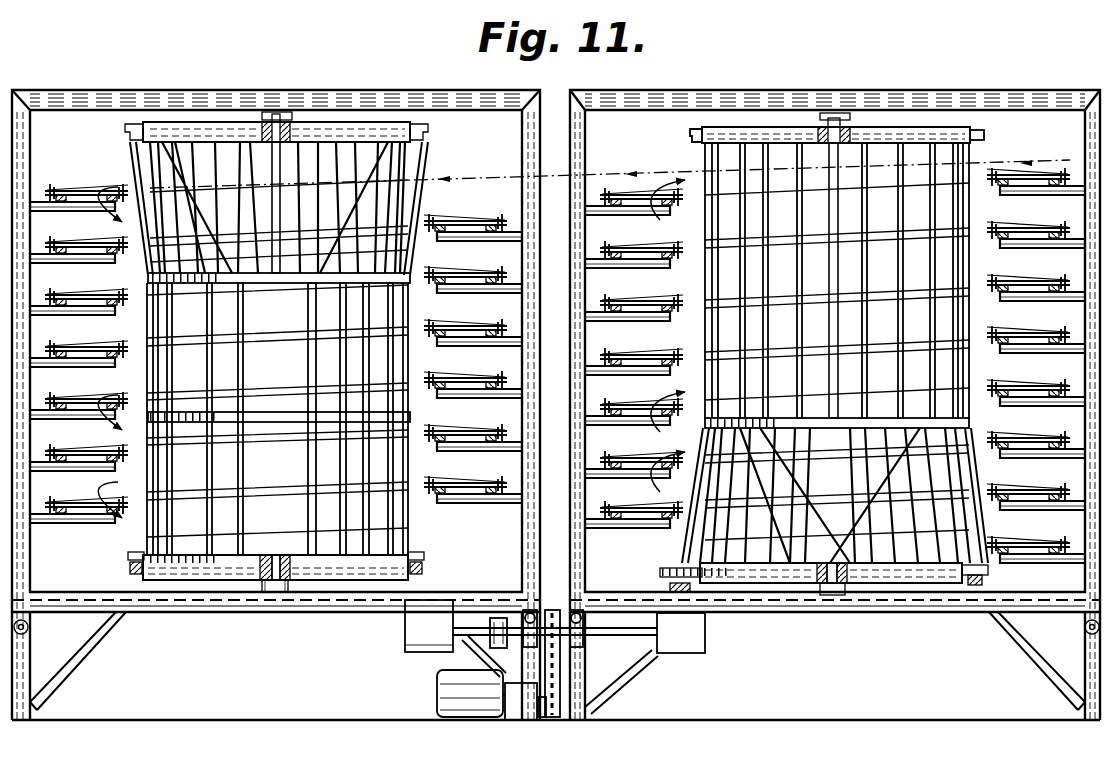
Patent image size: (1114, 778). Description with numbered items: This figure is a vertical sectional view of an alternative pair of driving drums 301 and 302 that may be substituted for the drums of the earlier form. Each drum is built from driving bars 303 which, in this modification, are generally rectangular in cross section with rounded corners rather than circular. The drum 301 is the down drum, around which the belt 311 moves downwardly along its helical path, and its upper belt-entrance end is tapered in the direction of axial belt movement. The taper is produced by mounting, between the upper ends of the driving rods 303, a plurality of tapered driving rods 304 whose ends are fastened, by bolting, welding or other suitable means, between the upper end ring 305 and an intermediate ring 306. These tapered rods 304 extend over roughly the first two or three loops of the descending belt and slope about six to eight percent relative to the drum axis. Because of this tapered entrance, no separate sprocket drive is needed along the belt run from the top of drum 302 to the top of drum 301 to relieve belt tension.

The driving drum 301 is at (126, 553).
The driving drum 302 is at (992, 573).
The driving bars 303 is at (233, 542).
The tapered driving rods 304 is at (130, 148).
The upper end ring 305 is at (365, 130).
The intermediate ring 306 is at (367, 278).
The belt 311 is at (67, 193).